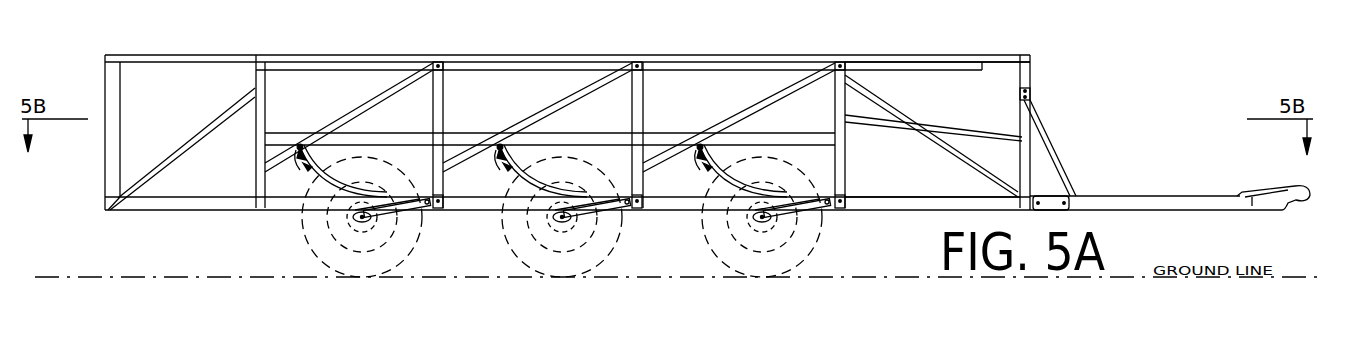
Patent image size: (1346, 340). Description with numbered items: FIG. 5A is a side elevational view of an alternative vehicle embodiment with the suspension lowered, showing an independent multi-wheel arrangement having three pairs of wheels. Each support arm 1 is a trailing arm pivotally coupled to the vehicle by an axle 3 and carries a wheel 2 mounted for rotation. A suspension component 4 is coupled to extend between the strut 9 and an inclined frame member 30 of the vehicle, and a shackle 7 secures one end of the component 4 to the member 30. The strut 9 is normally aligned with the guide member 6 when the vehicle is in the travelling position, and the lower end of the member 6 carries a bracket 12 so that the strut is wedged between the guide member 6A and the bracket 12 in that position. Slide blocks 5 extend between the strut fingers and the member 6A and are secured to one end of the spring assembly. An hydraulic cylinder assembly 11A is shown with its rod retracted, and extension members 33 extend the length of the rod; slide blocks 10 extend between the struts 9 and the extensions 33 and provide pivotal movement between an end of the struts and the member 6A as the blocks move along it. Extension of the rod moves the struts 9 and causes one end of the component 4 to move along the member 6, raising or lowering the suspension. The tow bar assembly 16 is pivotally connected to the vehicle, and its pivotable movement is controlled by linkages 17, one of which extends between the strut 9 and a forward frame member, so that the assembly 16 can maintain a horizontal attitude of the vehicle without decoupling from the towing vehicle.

The support arm 1 is at (568, 217).
The wheel 2 is at (587, 262).
The axle 3 is at (608, 227).
The suspension component 4 is at (528, 171).
The slide block 5 is at (838, 193).
The guide member 6 is at (445, 92).
The guide member 6A is at (305, 55).
The shackle 7 is at (491, 138).
The strut 9 is at (550, 129).
The slide block 10 is at (618, 45).
The hydraulic cylinder assembly 11A is at (908, 55).
The bracket 12 is at (664, 216).
The tow bar assembly 16 is at (1192, 196).
The linkage 17 is at (927, 126).
The inclined frame member 30 is at (355, 118).
The extension member 33 is at (503, 62).